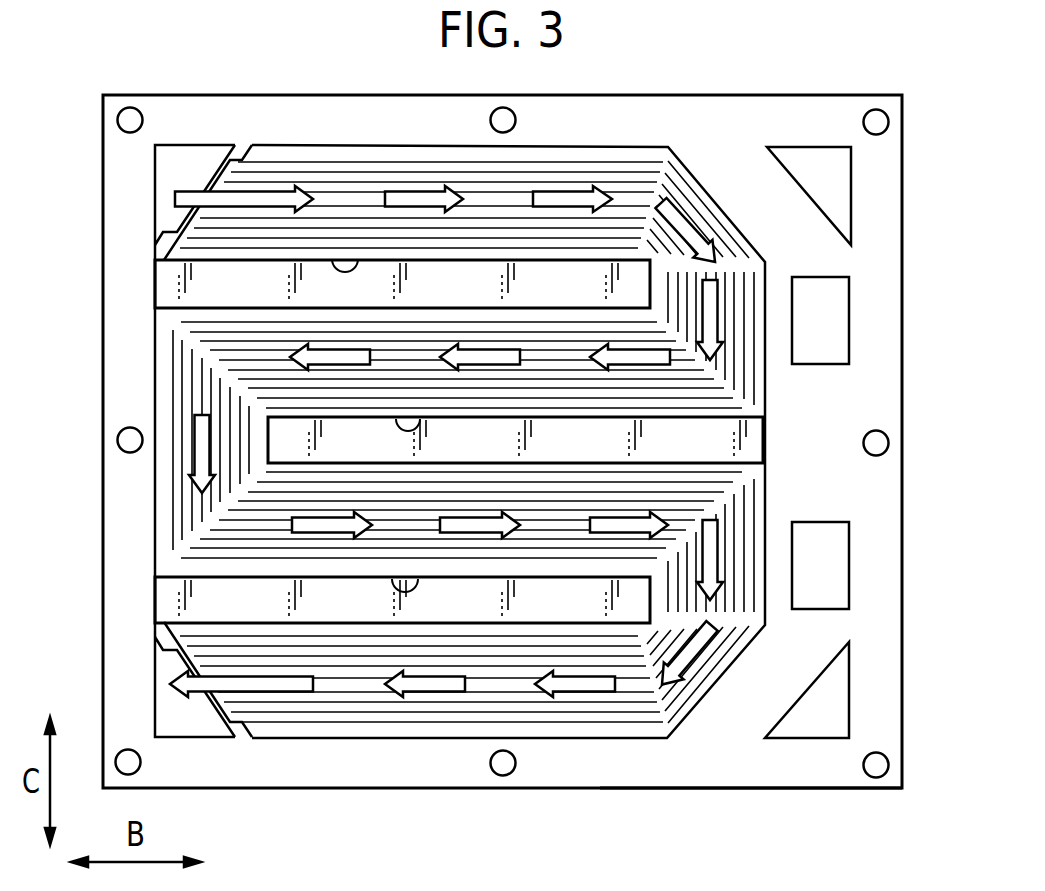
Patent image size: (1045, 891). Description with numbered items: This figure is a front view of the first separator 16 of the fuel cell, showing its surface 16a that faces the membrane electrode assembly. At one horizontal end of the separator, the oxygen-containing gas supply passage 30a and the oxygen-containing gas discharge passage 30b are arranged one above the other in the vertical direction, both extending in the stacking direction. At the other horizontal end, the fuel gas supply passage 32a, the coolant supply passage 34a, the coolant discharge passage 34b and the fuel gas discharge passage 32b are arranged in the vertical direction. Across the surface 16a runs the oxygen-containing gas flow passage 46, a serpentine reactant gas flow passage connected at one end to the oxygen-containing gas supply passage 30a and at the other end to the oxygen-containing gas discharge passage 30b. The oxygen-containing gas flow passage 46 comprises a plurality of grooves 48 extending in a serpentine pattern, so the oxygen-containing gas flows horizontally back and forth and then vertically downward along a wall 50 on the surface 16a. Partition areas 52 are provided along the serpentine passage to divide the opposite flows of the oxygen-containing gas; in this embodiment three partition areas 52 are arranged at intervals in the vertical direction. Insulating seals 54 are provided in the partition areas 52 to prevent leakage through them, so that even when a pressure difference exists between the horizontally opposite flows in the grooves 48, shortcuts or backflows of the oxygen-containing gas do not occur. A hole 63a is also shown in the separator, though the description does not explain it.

The first separator 16 is at (683, 67).
The surface 16a is at (742, 770).
The oxygen-containing gas supply passage 30a is at (195, 195).
The oxygen-containing gas discharge passage 30b is at (195, 689).
The fuel gas supply passage 32a is at (809, 195).
The fuel gas discharge passage 32b is at (807, 691).
The coolant supply passage 34a is at (820, 320).
The coolant discharge passage 34b is at (820, 565).
The oxygen-containing gas flow passage 46 is at (463, 183).
The grooves 48 is at (602, 178).
The wall 50 is at (314, 148).
The partition areas 52 is at (355, 257).
The insulating seals 54 is at (167, 287).
The bolt hole 63a is at (117, 440).